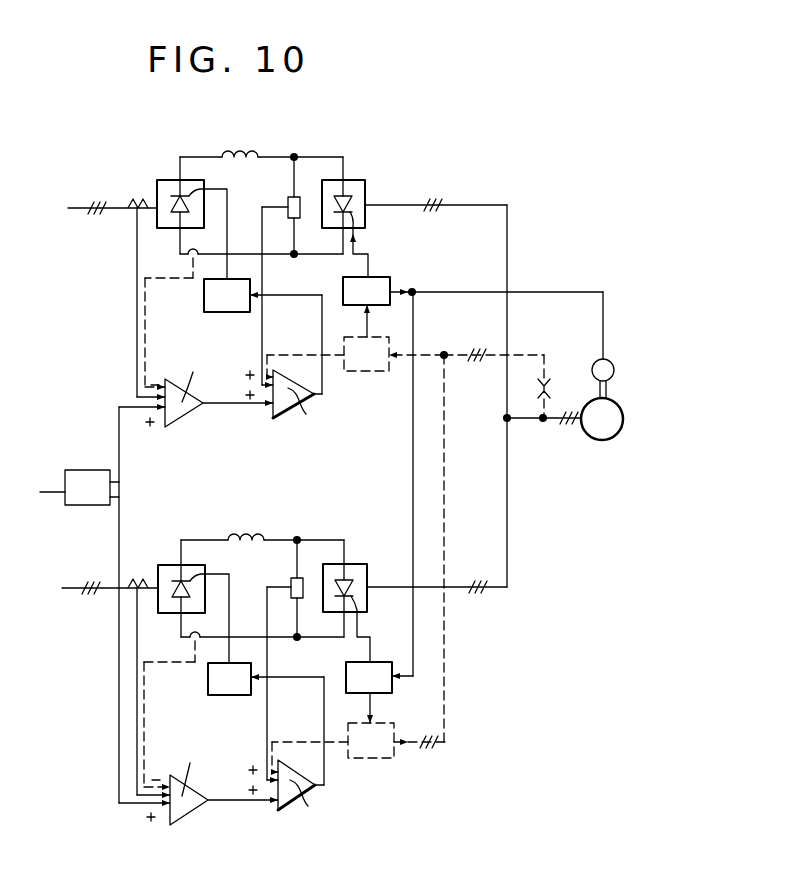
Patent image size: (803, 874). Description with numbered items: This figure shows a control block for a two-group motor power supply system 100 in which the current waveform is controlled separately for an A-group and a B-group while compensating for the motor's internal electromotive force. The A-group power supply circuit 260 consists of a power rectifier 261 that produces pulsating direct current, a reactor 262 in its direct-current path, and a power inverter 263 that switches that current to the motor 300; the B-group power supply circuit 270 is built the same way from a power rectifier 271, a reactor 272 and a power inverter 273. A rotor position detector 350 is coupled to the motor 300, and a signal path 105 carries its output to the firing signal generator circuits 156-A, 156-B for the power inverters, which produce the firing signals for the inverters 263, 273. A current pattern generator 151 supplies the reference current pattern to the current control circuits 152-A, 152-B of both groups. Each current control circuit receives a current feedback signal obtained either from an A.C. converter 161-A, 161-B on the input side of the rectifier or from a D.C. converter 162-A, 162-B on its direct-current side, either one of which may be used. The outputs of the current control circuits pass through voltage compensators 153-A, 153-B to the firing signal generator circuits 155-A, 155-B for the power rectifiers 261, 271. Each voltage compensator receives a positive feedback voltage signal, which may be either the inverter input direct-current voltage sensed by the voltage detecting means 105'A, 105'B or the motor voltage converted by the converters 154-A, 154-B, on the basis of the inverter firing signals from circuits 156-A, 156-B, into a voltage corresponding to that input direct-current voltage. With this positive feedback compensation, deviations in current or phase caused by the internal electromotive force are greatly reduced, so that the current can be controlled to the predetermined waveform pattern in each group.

The motor control system 100 is at (104, 359).
The current pattern generator 151 is at (70, 470).
The current control circuit 152-A is at (187, 417).
The current control circuit 152-B is at (188, 822).
The voltage compensator 153-A is at (291, 421).
The voltage compensator 153-B is at (290, 812).
The converter 154-A is at (352, 371).
The converter 154-B is at (388, 752).
The firing signal generator circuit 155-A is at (218, 312).
The firing signal generator circuit 155-B is at (222, 695).
The firing signal generator circuit for the power inverter 156-A is at (410, 268).
The firing signal generator circuit for the power inverter 156-B is at (392, 662).
The A.C. converter 161-A is at (132, 215).
The A.C. converter 161-B is at (133, 597).
The D.C. converter 162-A is at (164, 323).
The D.C. converter 162-B is at (192, 641).
The A-group power supply circuit 260 is at (207, 132).
The power rectifier 261 is at (158, 178).
The reactor 262 is at (245, 152).
The power inverter 263 is at (363, 180).
The B-group power supply circuit 270 is at (207, 509).
The power rectifier 271 is at (160, 563).
The reactor 272 is at (245, 536).
The power inverter 273 is at (365, 564).
The voltage detecting means 105'A is at (292, 249).
The voltage detecting means 105'B is at (266, 661).
The speed detector 105 is at (510, 530).
The motor 300 is at (645, 401).
The rotor position detector 350 is at (612, 365).